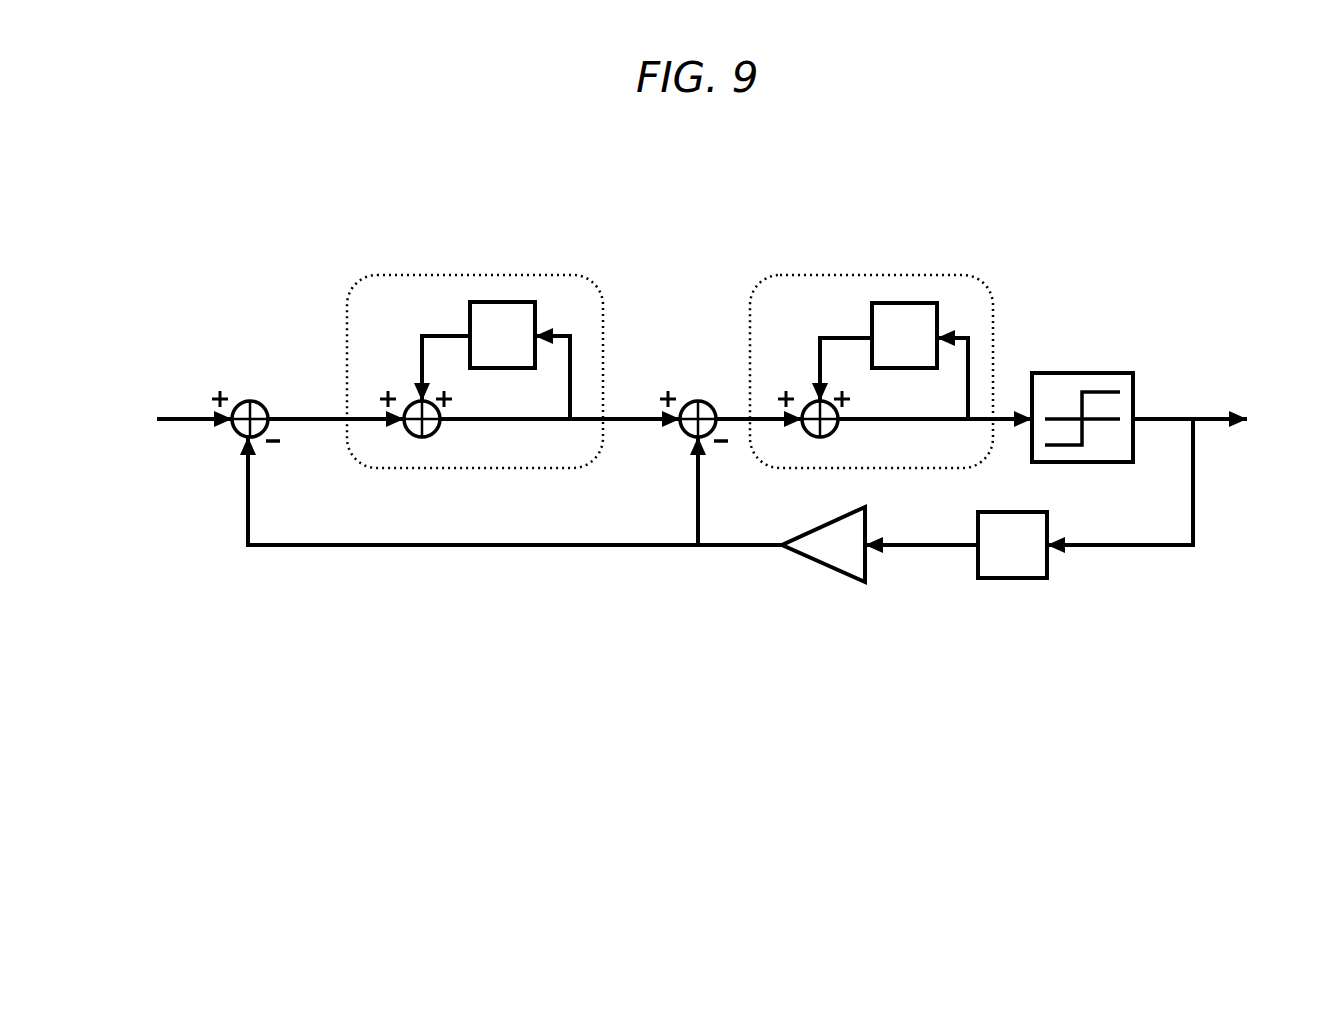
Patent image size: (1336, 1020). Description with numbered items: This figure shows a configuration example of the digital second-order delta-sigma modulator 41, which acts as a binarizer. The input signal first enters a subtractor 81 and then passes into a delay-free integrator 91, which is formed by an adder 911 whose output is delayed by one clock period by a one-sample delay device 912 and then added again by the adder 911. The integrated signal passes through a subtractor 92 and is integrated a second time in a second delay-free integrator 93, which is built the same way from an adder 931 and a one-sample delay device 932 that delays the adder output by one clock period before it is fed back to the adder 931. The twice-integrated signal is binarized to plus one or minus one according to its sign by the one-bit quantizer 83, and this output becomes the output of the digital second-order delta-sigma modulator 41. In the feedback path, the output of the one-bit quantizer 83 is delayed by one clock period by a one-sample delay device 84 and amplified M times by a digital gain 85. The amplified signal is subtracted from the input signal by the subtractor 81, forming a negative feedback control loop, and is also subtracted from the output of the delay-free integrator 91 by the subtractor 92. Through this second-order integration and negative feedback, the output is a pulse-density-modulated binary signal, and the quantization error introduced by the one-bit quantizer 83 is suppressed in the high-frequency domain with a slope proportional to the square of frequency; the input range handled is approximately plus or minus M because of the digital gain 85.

The digital second-order delta-sigma modulator 41 is at (845, 176).
The subtractor 81 is at (252, 401).
The delay-free integrator 91 is at (477, 275).
The adder 911 is at (444, 406).
The one-sample delay device 912 is at (470, 320).
The subtractor 92 is at (700, 401).
The second delay-free integrator 93 is at (868, 275).
The adder 931 is at (842, 407).
The one-sample delay device 932 is at (872, 322).
The one-bit quantizer 83 is at (1078, 373).
The one-sample delay device 84 is at (1012, 578).
The digital gain 85 is at (832, 572).